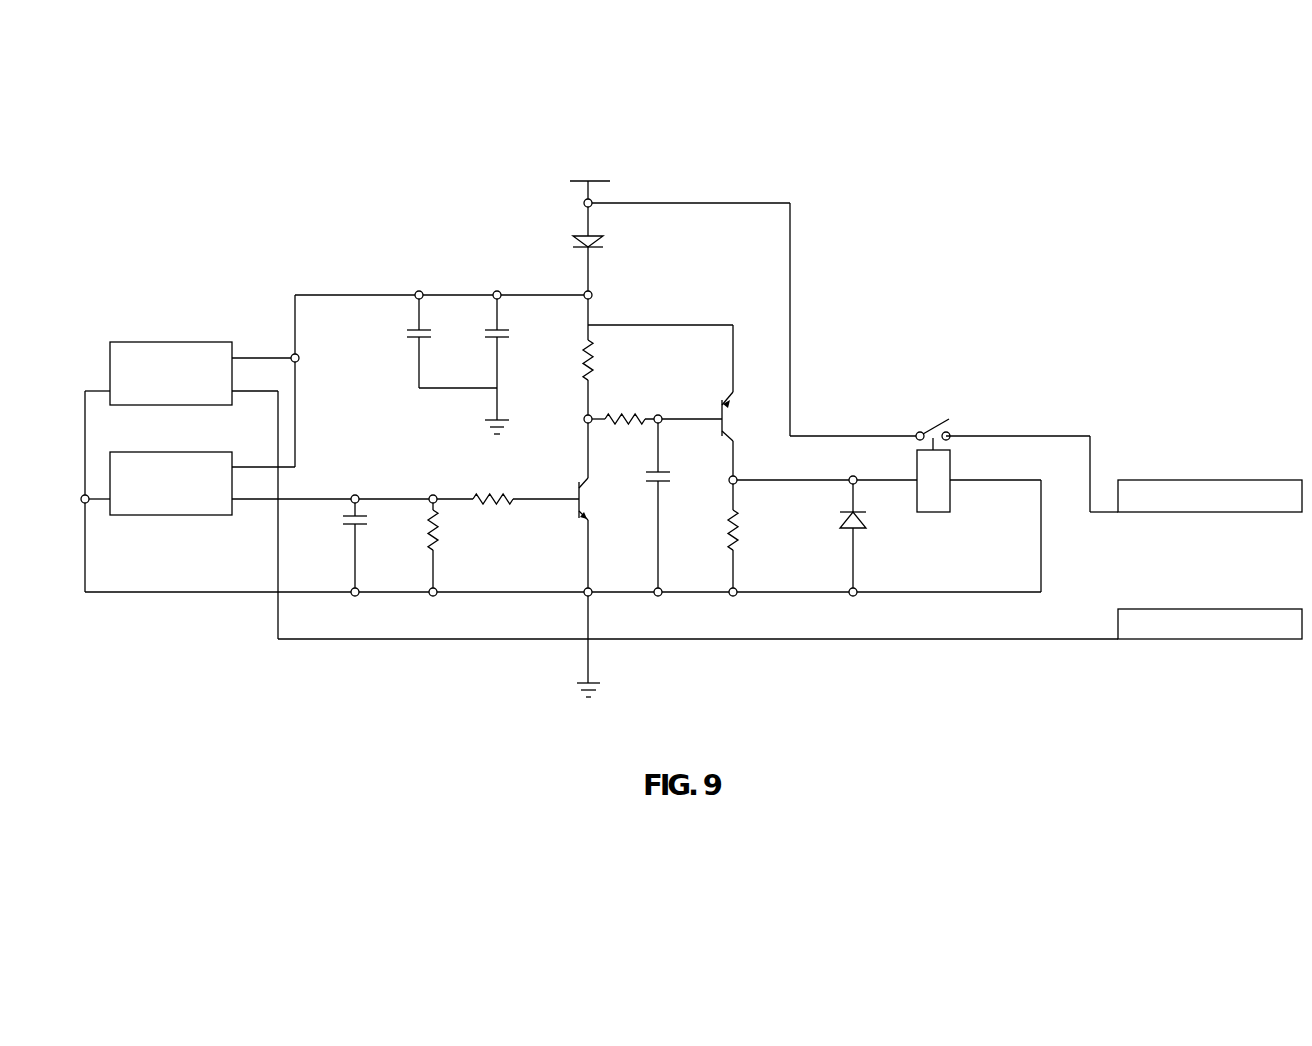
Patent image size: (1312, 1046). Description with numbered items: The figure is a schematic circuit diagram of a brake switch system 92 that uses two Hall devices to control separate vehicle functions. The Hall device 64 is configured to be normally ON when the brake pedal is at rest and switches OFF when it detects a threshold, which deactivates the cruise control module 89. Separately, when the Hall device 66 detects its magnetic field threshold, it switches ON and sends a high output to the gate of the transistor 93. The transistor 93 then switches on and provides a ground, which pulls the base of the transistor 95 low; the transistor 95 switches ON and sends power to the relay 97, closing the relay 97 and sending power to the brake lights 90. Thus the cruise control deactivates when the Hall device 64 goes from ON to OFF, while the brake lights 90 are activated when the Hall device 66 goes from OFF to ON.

The brake switch system 92 is at (134, 238).
The Hall device 64 is at (215, 341).
The Hall device 66 is at (152, 517).
The transistor 93 is at (573, 509).
The transistor 95 is at (773, 420).
The relay 97 is at (933, 392).
The brake lights 90 is at (1210, 479).
The cruise control module 89 is at (1208, 640).